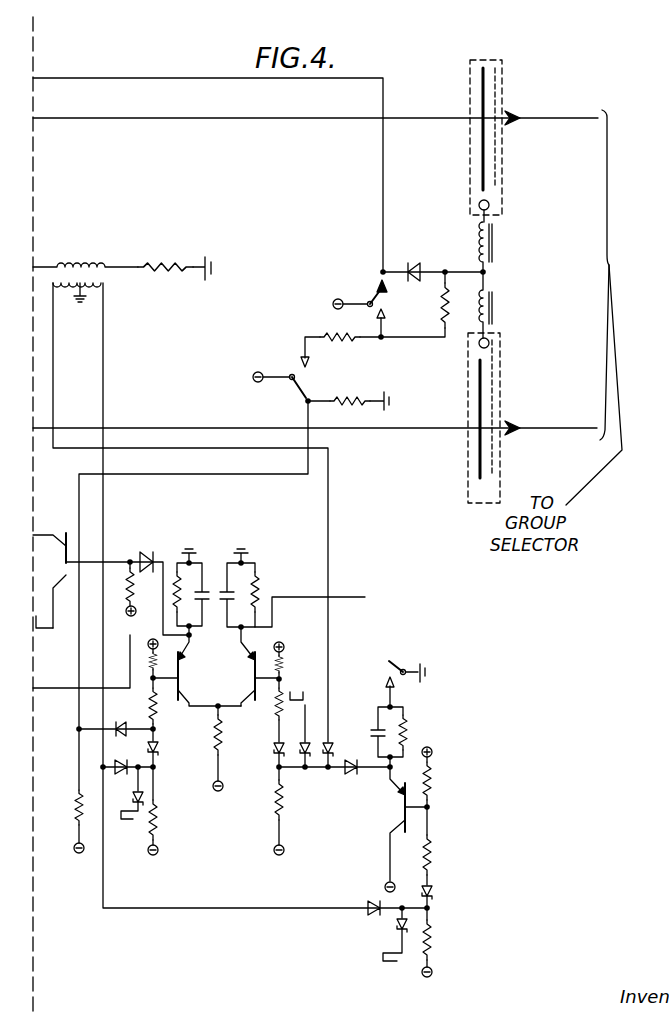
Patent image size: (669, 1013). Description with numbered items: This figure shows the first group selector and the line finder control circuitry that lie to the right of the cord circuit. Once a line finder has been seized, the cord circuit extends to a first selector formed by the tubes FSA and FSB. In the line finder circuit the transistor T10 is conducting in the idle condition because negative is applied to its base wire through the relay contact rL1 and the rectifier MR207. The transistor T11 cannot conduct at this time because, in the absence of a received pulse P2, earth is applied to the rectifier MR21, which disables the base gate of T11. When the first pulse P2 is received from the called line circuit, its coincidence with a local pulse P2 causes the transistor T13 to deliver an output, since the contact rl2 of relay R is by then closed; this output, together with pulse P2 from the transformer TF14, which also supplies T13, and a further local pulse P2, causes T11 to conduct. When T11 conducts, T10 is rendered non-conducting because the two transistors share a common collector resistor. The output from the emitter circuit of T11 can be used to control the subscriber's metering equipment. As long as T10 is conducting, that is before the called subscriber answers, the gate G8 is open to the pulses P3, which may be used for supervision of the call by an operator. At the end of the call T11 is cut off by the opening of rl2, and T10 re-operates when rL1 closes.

The first selector tube FSA is at (494, 156).
The first selector tube FSB is at (505, 387).
The relay R is at (393, 315).
The relay contact r11 rL1 is at (269, 383).
The transformer TF14 is at (122, 271).
The gate G8 is at (111, 610).
The P3 pulses P3 is at (50, 638).
The transistor T10 is at (197, 627).
The transistor T11 is at (389, 627).
The P2 pulse P2 is at (265, 831).
The rectifier MR20 MR207 is at (93, 747).
The rectifier MR21 is at (370, 737).
The relay contact r12 rl2 is at (402, 672).
The transistor T13 is at (400, 862).